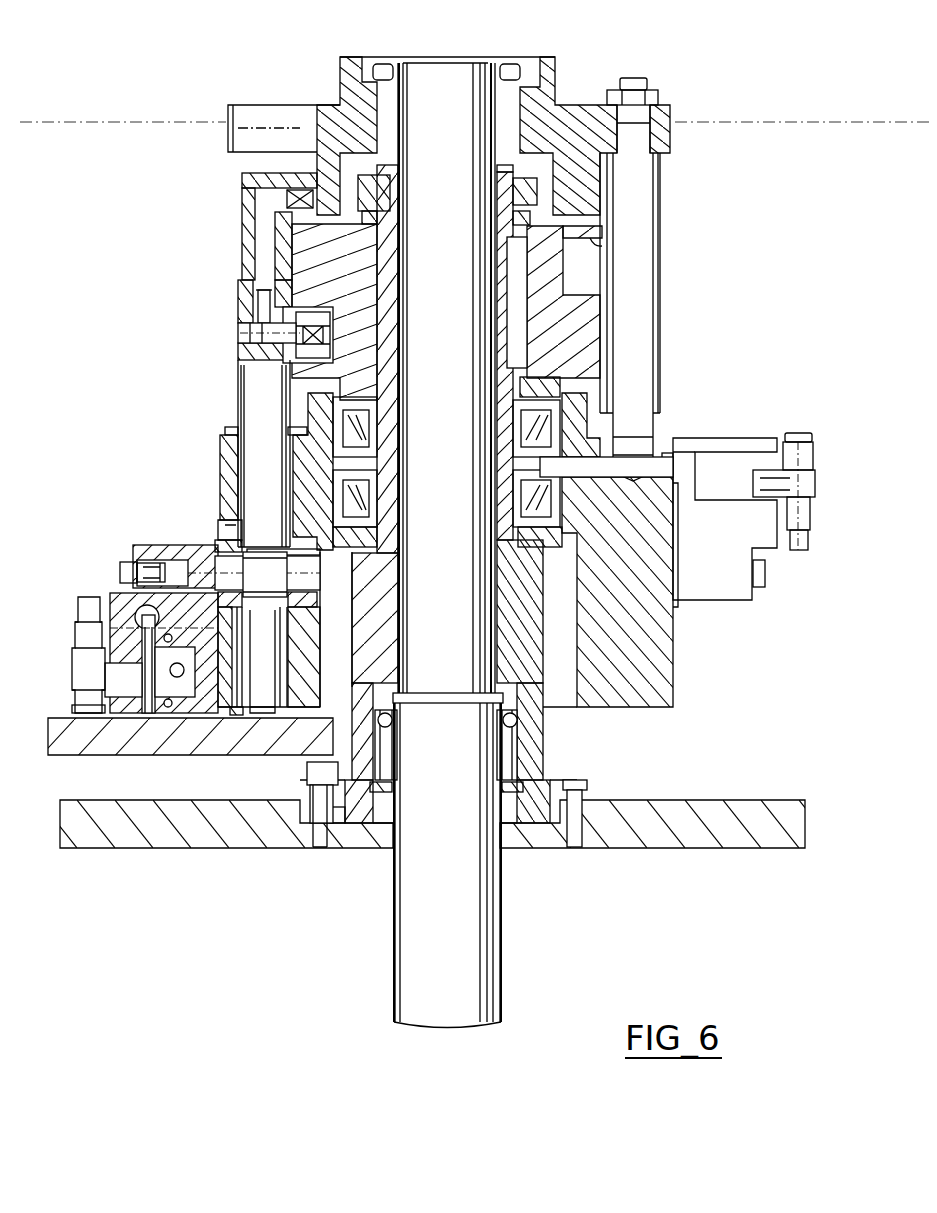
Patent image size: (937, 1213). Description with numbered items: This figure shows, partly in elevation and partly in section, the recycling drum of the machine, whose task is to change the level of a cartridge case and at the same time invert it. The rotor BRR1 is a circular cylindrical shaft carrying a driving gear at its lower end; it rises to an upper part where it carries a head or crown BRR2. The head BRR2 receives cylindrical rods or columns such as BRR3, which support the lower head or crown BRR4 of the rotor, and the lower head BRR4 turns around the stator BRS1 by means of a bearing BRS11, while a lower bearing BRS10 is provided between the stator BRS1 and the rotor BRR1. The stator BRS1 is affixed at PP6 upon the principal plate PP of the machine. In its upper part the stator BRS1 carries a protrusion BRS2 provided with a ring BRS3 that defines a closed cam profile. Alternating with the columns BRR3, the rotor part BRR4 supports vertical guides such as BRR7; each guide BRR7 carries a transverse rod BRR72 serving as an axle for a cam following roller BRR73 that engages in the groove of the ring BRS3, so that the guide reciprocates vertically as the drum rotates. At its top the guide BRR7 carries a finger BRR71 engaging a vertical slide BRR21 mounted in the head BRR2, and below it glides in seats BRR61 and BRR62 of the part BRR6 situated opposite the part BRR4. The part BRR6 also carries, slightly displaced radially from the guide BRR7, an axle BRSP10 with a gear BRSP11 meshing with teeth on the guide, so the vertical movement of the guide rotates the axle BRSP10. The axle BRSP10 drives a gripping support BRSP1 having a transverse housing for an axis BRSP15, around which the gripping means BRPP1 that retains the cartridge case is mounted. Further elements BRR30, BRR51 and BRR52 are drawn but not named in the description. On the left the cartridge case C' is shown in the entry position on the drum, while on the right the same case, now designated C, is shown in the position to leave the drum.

The rotor BRR1 is at (478, 958).
The head or crown BRR2 is at (548, 75).
The vertical slide BRR21 is at (305, 118).
The cylindrical rod or shaft BRR3 is at (640, 185).
The nut BRR30 is at (660, 92).
The lower head or crown of the rotor BRR4 is at (640, 540).
The block BRR51 is at (228, 540).
The block BRR52 is at (265, 585).
The part BRR6 is at (232, 470).
The seat BRR61 is at (232, 430).
The seat BRR62 is at (245, 592).
The vertical shaft or guide BRR7 is at (262, 380).
The finger BRR71 is at (252, 180).
The transverse rod or shaft BRR72 is at (258, 335).
The cam following roller BRR73 is at (305, 330).
The stator BRS1 is at (540, 745).
The bearing BRS10 is at (520, 760).
The bearing BRS11 is at (548, 440).
The protrusion BRS2 is at (590, 318).
The ring BRS3 is at (598, 246).
The gripping support BRSP1 is at (127, 600).
The axle BRSP10 is at (177, 563).
The gear BRSP11 is at (266, 700).
The axis BRSP15 is at (150, 690).
The gripping means BRPP1 is at (117, 705).
The principal plate PP is at (200, 832).
The fixing point PP6 is at (322, 848).
The cartridge case C is at (785, 513).
The cartridge case C' is at (72, 650).